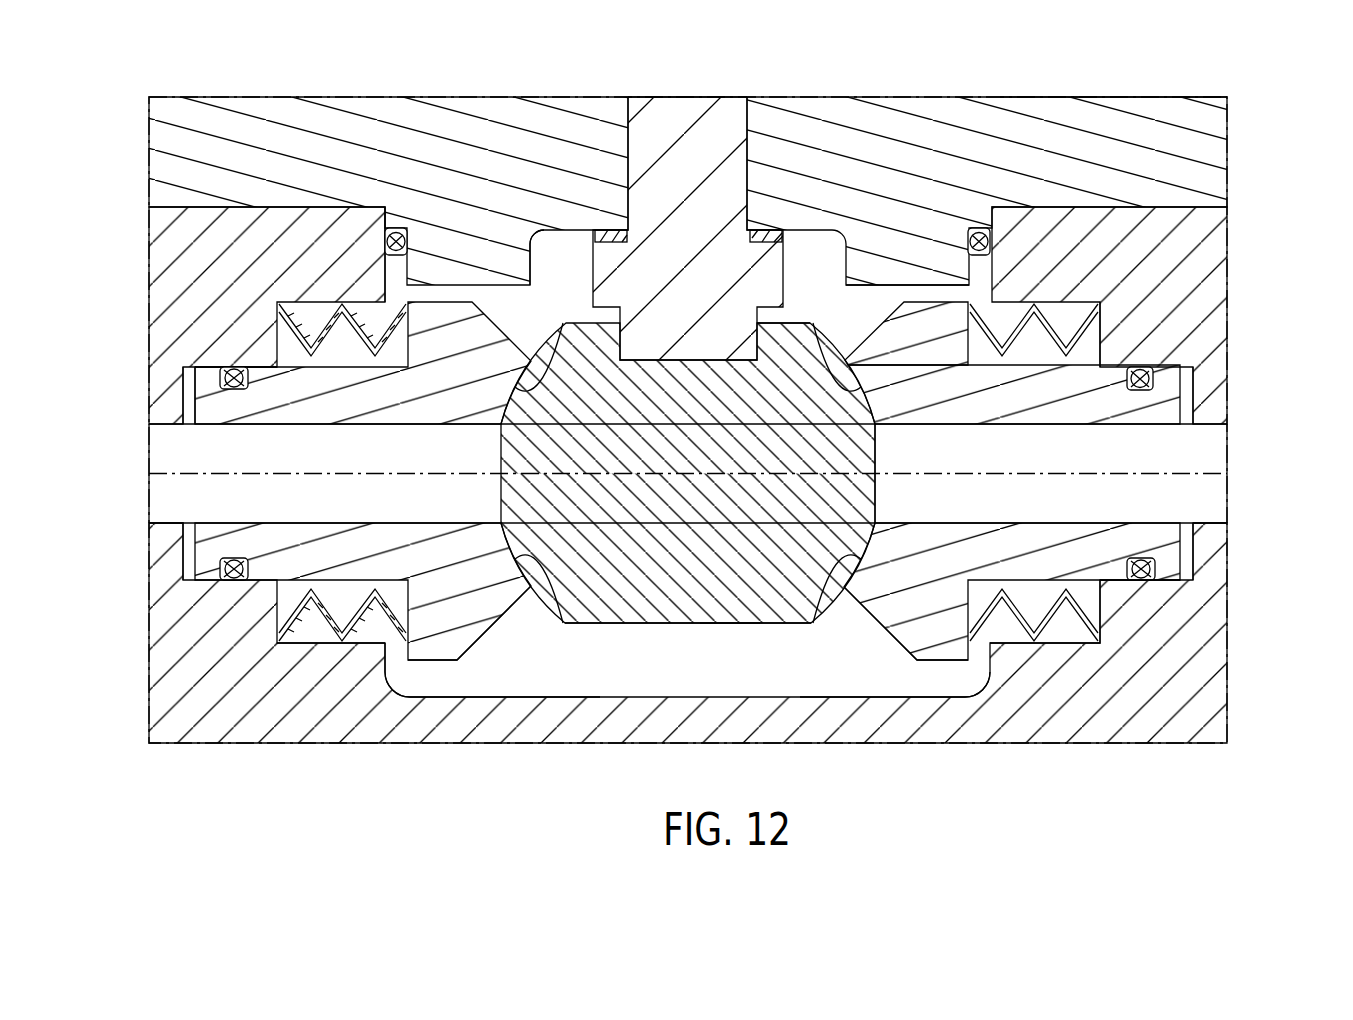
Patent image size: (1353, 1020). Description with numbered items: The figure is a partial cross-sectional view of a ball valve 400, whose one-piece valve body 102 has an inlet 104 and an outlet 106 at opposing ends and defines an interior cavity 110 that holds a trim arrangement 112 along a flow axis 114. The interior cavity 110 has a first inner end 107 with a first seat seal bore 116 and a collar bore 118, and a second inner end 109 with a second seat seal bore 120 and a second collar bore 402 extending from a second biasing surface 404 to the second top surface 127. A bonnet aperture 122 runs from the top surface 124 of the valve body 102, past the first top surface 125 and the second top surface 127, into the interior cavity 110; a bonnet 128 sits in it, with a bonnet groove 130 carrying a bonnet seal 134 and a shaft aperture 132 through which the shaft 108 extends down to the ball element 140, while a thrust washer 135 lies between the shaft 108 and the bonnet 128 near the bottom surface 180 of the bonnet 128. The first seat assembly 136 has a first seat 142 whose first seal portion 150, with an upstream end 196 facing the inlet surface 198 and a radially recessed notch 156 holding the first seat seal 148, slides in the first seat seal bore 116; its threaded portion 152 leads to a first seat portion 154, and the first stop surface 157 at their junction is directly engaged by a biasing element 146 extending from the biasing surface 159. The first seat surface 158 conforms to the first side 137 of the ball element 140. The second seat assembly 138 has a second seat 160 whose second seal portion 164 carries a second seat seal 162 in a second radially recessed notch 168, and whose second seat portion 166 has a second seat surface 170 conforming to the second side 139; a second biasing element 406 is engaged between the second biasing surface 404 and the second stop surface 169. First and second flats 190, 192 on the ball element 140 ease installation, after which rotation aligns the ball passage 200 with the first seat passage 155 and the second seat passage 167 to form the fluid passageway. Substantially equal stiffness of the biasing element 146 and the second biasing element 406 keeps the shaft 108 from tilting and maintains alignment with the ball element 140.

The ball valve 400 is at (1082, 57).
The bonnet groove 130 is at (386, 226).
The bonnet aperture 122 is at (398, 222).
The bottom surface 180 is at (522, 282).
The thrust washer 135 is at (602, 229).
The shaft aperture 132 is at (633, 140).
The shaft 108 is at (708, 148).
The first seat portion 154 is at (930, 283).
The bonnet seal 134 is at (978, 226).
The bonnet 128 is at (992, 128).
The top surface 124 is at (208, 207).
The second top surface 127 is at (343, 305).
The second radially recessed notch 168 is at (226, 370).
The second seal portion 164 is at (214, 403).
The trim arrangement 112 is at (187, 434).
The outlet 106 is at (136, 489).
The second seat seal bore 120 is at (180, 566).
The second seat seal 162 is at (200, 584).
The second biasing surface 404 is at (284, 594).
The flow axis 114 is at (257, 476).
The second biasing element 406 is at (292, 312).
The second stop surface 169 is at (402, 310).
The second side 139 is at (500, 425).
The second seat passage 167 is at (310, 522).
The second seat surface 170 is at (565, 323).
The first flat 190 is at (793, 322).
The first seat surface 158 is at (830, 334).
The ball passage 200 is at (729, 522).
The first seat passage 155 is at (993, 522).
The first side 137 is at (877, 426).
The first stop surface 157 is at (974, 306).
The biasing element 146 is at (1081, 306).
The radially recessed notch 156 is at (1158, 378).
The first top surface 125 is at (1112, 290).
The biasing surface 159 is at (1097, 337).
The first seat seal bore 116 is at (1202, 392).
The inlet 104 is at (1243, 458).
The inlet surface 198 is at (1194, 553).
The upstream end 196 is at (1184, 578).
The first seat seal 148 is at (1156, 586).
The valve body 102 is at (1186, 690).
The second collar bore 402 is at (314, 647).
The second seat portion 166 is at (427, 675).
The second inner end 109 is at (446, 677).
The second seat 160 is at (482, 613).
The second seat assembly 138 is at (521, 622).
The ball element 140 is at (670, 605).
The interior cavity 110 is at (678, 670).
The second flat 192 is at (726, 621).
The first seat assembly 136 is at (856, 630).
The first seat 142 is at (896, 607).
The first inner end 107 is at (939, 675).
The threaded portion 152 is at (978, 600).
The collar bore 118 is at (1075, 646).
The first seal portion 150 is at (1118, 570).